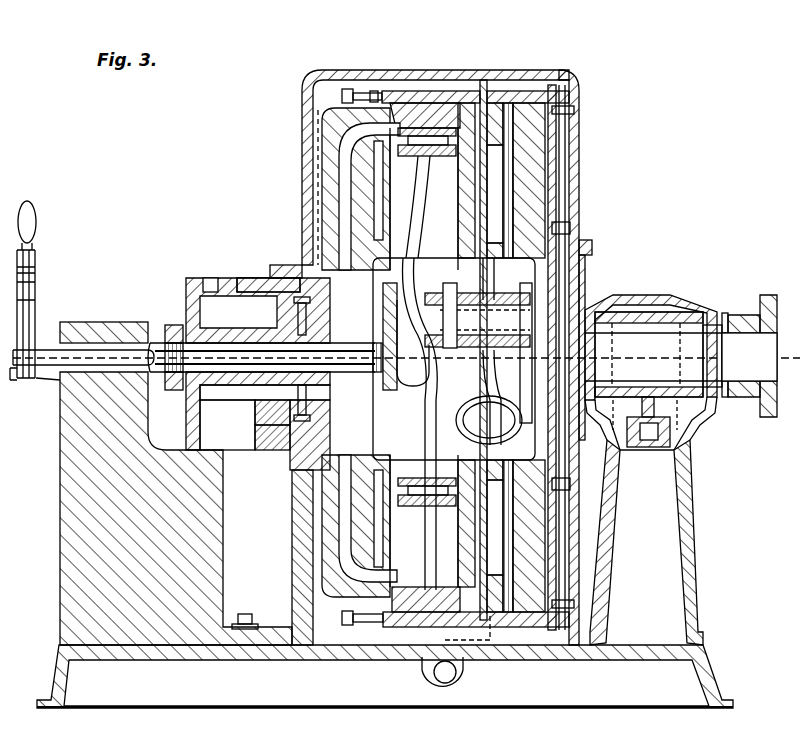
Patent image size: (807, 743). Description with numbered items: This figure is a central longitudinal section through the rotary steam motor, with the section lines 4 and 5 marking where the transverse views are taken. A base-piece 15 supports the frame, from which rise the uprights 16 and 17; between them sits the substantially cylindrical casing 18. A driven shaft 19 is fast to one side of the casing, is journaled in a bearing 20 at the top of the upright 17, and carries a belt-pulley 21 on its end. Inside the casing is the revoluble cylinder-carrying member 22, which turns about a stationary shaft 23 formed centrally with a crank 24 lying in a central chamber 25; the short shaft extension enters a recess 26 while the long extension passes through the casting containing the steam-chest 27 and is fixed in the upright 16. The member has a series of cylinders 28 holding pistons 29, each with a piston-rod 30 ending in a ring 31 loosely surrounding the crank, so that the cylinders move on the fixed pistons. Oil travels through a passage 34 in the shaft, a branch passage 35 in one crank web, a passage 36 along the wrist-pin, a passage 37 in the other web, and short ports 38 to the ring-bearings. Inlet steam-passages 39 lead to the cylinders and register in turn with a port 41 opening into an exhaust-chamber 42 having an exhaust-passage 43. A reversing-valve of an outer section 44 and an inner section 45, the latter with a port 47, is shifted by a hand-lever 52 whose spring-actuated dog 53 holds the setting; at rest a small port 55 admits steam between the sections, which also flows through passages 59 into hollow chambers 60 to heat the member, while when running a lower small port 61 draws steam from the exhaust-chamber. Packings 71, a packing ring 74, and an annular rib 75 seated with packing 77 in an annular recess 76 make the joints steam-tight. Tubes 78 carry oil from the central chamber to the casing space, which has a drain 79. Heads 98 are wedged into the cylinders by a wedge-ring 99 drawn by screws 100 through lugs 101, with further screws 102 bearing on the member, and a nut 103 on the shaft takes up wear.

The section line 4 4 is at (445, 725).
The section line 5 5 is at (375, 680).
The base-piece 15 is at (222, 662).
The upright 16 is at (60, 463).
The upright 17 is at (689, 549).
The casing 18 is at (579, 203).
The driven shaft 19 is at (660, 363).
The bearing 20 is at (648, 305).
The belt-pulley 21 is at (740, 370).
The revoluble cylinder-carrying member 22 is at (556, 172).
The stationary shaft 23 is at (160, 340).
The crank 24 is at (466, 340).
The central chamber 25 is at (407, 364).
The recess 26 is at (589, 292).
The steam-chest 27 is at (215, 300).
The cylinders 28 is at (474, 678).
The pistons 29 is at (424, 357).
The piston-rod 30 is at (428, 214).
The ring 31 is at (480, 383).
The passage 34 is at (90, 355).
The branch passage 35 is at (389, 324).
The passage 36 is at (497, 372).
The passage 37 is at (586, 265).
The ports 38 is at (454, 358).
The inlet steam-passages 39 is at (340, 183).
The port 41 is at (227, 425).
The exhaust-chamber 42 is at (200, 406).
The exhaust-passage 43 is at (241, 478).
The outer section 44 is at (265, 399).
The inner section 45 is at (342, 354).
The port 47 is at (373, 734).
The hand-lever 52 is at (37, 285).
The spring-actuated dog 53 is at (36, 225).
The small port 55 is at (268, 326).
The passages 59 is at (316, 233).
The hollow communicating chambers 60 is at (355, 147).
The small port 61 is at (272, 400).
The packings 71 is at (310, 418).
The packing ring 74 is at (294, 487).
The annular rib 75 is at (288, 268).
The annular recess 76 is at (262, 278).
The packing 77 is at (310, 435).
The passages or tubes 78 is at (501, 350).
The drain 79 is at (432, 685).
The heads 98 is at (430, 105).
The wedge-ring 99 is at (532, 84).
The screws 100 is at (345, 90).
The lugs 101 is at (358, 90).
The screws 102 is at (574, 118).
The nut 103 is at (174, 324).